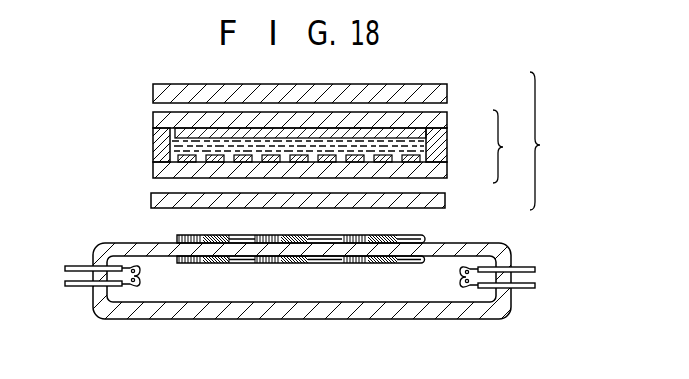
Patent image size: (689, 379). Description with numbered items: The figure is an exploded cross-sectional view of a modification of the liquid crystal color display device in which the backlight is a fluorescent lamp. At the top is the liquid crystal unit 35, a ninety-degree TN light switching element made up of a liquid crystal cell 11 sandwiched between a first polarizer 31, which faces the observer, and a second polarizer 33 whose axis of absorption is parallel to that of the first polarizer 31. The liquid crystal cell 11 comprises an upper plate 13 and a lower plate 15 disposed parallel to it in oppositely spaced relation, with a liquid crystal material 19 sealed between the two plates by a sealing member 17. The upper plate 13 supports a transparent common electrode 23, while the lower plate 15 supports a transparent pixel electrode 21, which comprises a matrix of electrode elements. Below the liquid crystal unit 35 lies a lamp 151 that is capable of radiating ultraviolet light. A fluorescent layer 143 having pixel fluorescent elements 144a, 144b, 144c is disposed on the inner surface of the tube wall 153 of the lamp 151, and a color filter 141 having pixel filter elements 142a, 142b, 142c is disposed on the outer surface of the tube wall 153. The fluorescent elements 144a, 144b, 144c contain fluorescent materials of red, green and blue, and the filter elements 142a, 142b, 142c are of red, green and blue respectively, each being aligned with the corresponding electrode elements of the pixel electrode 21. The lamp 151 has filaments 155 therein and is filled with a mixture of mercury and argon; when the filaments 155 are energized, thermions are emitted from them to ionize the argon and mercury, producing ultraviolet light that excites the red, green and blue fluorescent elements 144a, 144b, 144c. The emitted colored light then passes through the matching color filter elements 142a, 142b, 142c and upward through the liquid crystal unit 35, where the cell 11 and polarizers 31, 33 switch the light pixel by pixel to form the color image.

The first polarizer 31 is at (447, 93).
The upper plate 13 is at (447, 122).
The transparent common electrode 23 is at (185, 137).
The sealing member 17 is at (157, 132).
The liquid crystal material 19 is at (428, 147).
The transparent pixel electrode 21 is at (178, 158).
The lower plate 15 is at (447, 170).
The liquid crystal cell 11 is at (510, 146).
The liquid crystal unit 35 is at (551, 141).
The second polarizer 33 is at (445, 203).
The color filter 141 is at (421, 240).
The pixel color filter element 142a is at (180, 239).
The pixel color filter element 142b is at (205, 236).
The pixel color filter element 142c is at (233, 236).
The fluorescent layer 143 is at (348, 263).
The pixel fluorescent element 144a is at (185, 264).
The pixel fluorescent element 144b is at (220, 265).
The pixel fluorescent element 144c is at (248, 265).
The lamp 151 is at (510, 262).
The tube wall 153 is at (481, 246).
The filaments 155 is at (123, 266).